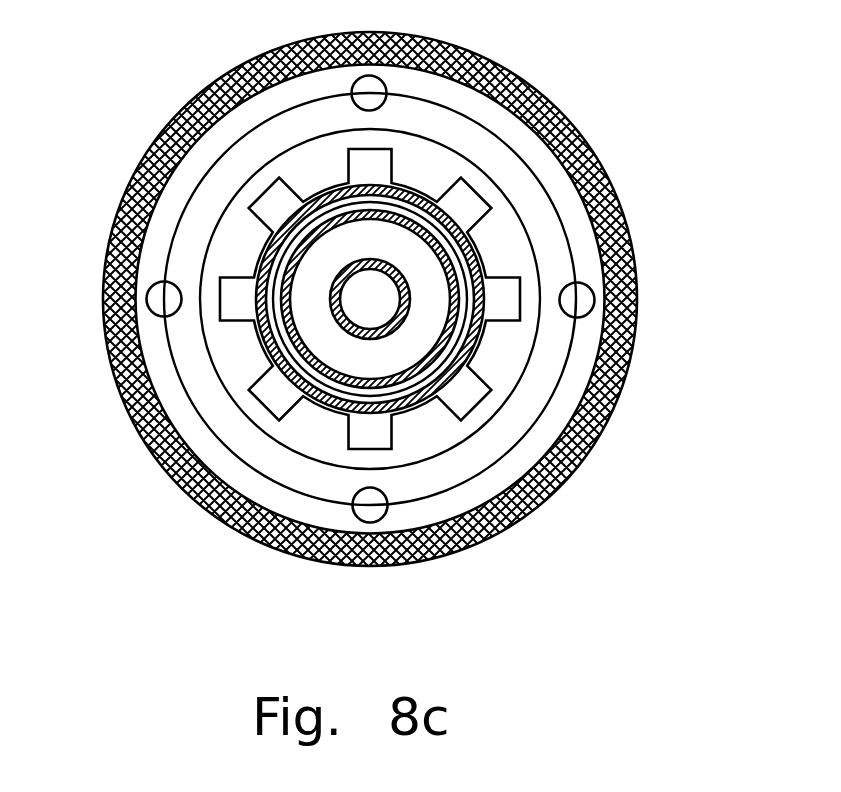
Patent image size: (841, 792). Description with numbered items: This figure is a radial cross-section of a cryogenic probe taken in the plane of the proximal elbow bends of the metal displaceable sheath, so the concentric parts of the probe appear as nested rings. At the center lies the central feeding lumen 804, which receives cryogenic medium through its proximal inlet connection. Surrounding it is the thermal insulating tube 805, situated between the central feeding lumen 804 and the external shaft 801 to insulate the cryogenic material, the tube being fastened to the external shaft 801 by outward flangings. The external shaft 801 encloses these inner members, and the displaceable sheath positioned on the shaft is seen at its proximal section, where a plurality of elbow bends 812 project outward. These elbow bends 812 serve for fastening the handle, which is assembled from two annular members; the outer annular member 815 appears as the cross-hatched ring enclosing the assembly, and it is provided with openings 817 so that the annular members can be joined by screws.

The external shaft 801 is at (277, 247).
The central feeding lumen 804 is at (330, 315).
The thermal insulating tube 805 is at (447, 275).
The elbow bends 812 is at (467, 400).
The annular member 815 is at (173, 475).
The openings 817 is at (577, 317).